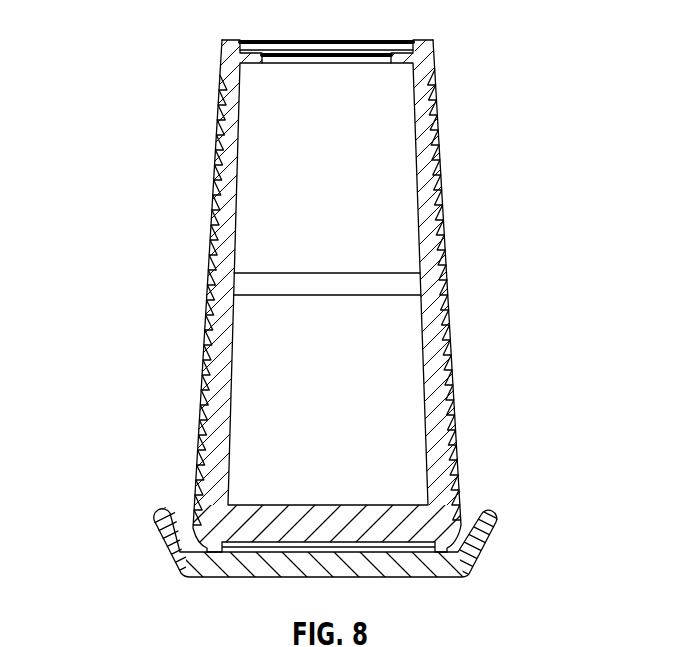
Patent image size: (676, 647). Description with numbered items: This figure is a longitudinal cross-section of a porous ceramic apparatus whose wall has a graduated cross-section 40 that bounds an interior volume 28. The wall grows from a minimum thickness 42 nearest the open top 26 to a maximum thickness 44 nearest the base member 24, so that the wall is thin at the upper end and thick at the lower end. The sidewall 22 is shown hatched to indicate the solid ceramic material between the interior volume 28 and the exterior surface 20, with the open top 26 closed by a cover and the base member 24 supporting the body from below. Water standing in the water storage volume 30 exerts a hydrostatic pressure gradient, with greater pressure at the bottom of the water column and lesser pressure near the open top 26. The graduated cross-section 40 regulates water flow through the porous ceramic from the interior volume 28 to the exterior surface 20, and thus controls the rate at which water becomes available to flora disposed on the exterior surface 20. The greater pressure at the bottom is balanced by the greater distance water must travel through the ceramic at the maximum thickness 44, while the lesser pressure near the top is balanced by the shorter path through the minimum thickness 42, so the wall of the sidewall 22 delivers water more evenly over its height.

The exterior surface 20 is at (472, 300).
The sidewall 22 is at (450, 372).
The base member 24 is at (487, 530).
The open top 26 is at (271, 27).
The interior volume 28 is at (342, 204).
The water storage volume 30 is at (398, 27).
The graduated cross-section 40 is at (112, 150).
The minimum thickness 42 is at (222, 88).
The maximum thickness 44 is at (200, 452).